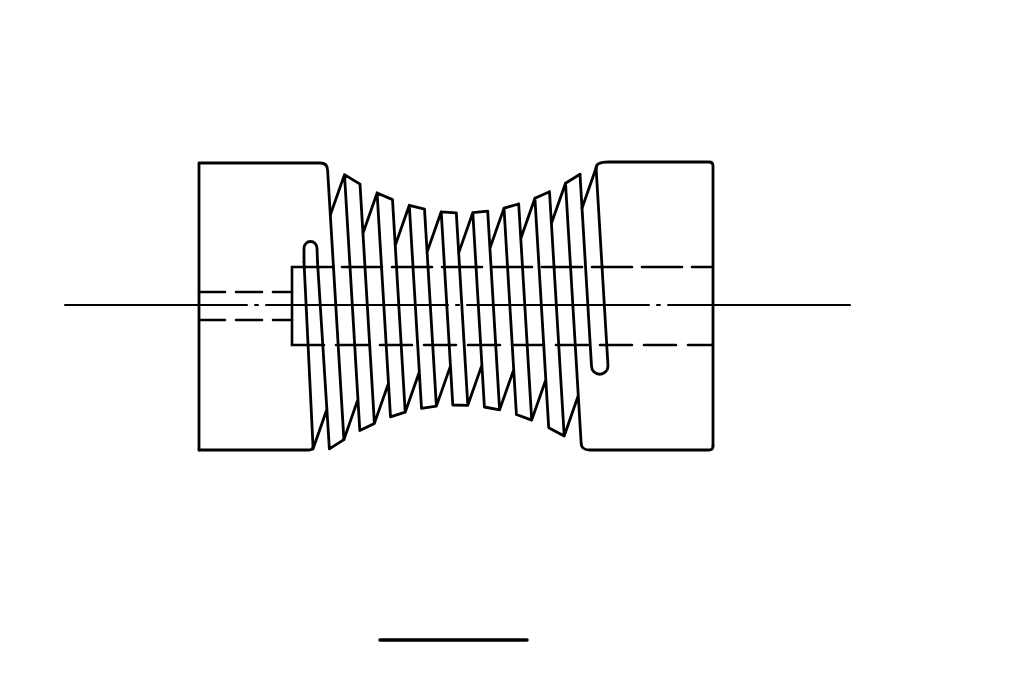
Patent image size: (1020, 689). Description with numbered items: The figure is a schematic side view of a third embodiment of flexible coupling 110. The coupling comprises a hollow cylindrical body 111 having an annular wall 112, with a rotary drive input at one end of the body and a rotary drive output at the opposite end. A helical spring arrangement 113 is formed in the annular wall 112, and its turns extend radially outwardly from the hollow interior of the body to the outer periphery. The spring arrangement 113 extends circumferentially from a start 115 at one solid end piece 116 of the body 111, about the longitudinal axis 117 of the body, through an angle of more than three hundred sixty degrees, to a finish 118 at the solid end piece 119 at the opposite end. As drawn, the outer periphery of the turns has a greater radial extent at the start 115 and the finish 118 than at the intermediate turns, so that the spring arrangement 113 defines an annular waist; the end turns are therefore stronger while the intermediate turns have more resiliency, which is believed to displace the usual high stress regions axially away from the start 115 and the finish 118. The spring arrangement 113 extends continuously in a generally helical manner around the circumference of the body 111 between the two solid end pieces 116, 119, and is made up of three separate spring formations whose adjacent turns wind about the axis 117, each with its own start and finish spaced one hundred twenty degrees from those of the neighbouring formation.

The flexible coupling 110 is at (641, 140).
The hollow cylindrical body 111 is at (713, 361).
The annular wall 112 is at (681, 213).
The helical spring arrangement 113 is at (453, 230).
The start 115 is at (306, 246).
The solid end piece 116 is at (230, 401).
The longitudinal axis 117 is at (767, 303).
The finish 118 is at (608, 368).
The solid end piece 119 is at (628, 425).